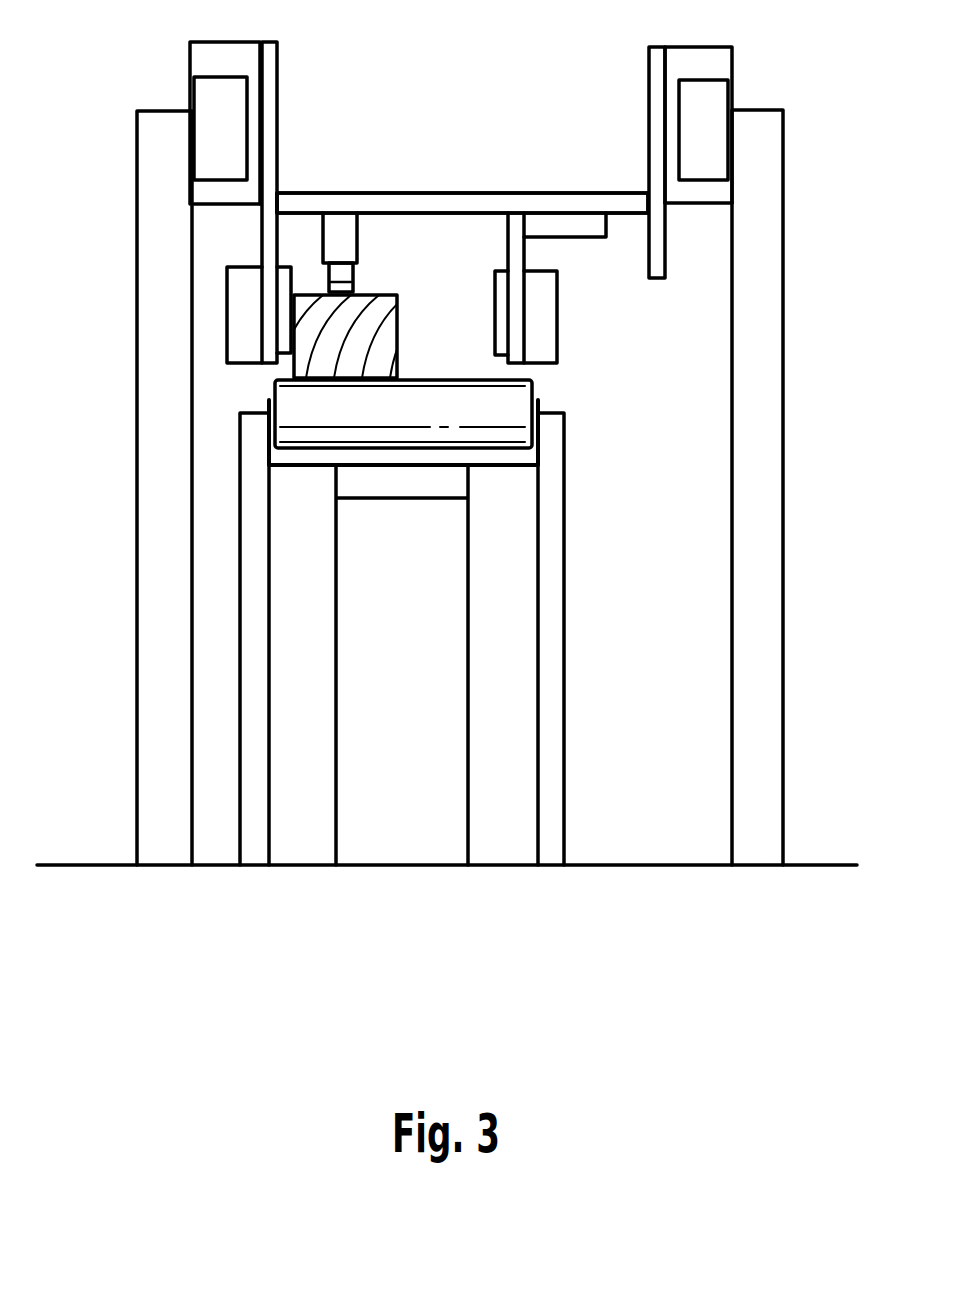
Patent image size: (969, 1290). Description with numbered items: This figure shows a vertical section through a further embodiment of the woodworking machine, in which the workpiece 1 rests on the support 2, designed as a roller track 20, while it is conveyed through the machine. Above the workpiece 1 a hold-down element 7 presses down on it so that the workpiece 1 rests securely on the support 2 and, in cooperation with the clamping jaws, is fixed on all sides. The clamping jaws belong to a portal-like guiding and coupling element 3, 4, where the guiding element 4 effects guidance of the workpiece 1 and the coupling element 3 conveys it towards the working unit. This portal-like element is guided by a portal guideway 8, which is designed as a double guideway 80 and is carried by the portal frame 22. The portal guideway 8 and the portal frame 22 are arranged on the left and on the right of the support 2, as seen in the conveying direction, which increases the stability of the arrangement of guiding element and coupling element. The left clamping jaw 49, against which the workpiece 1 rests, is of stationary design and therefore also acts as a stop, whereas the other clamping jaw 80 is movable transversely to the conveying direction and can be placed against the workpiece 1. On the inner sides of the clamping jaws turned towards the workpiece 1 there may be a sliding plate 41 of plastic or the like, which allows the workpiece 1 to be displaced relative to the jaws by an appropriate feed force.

The workpiece 1 is at (383, 348).
The support 2 is at (560, 460).
The coupling element 3 is at (370, 146).
The guiding element 4 is at (370, 135).
The hold-down element 7 is at (340, 240).
The portal guideway 8 is at (205, 53).
The roller track 20 is at (533, 390).
The portal frame 22 is at (757, 213).
The sliding plate 41 is at (283, 293).
The left clamping jaw 49 is at (263, 332).
The double guideway 80 is at (518, 337).